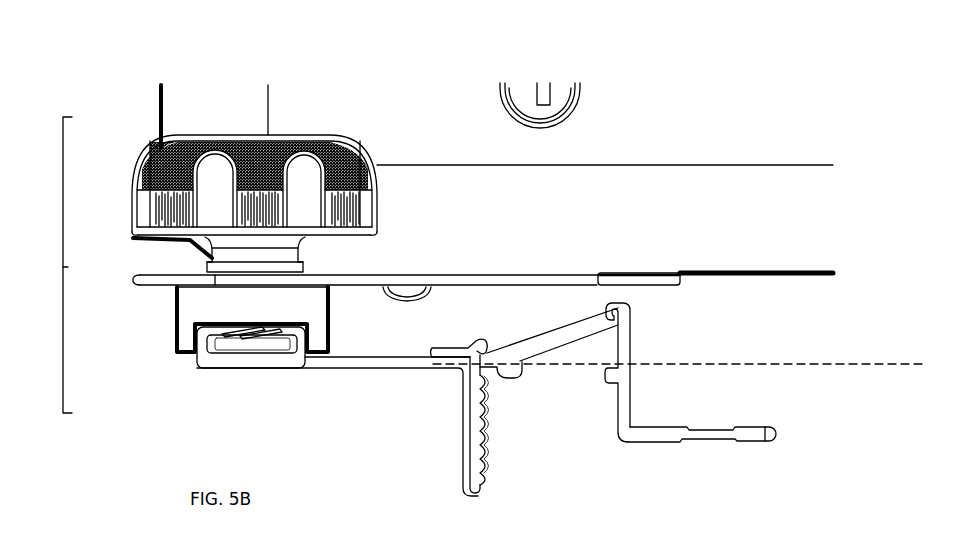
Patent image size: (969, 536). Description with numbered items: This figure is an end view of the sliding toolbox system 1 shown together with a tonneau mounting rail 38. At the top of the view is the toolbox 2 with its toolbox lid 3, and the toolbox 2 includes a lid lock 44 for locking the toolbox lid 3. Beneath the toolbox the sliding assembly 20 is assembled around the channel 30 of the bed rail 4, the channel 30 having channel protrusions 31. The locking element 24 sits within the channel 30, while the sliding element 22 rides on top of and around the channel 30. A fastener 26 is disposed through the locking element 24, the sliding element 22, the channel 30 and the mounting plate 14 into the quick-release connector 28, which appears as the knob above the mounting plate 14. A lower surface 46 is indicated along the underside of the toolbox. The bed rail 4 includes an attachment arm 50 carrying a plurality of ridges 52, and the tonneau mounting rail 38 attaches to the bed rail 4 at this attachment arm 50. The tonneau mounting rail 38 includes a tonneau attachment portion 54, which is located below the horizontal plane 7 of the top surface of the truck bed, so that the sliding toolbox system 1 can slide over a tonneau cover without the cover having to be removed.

The sliding toolbox system 1 is at (136, 40).
The toolbox 2 is at (176, 94).
The toolbox lid 3 is at (798, 150).
The bed rail 4 is at (390, 367).
The horizontal plane 7 is at (687, 367).
The mounting plate 14 is at (147, 283).
The sliding assembly 20 is at (47, 265).
The sliding element 22 is at (177, 315).
The locking element 24 is at (217, 340).
The fastener 26 is at (260, 335).
The quick-release connector 28 is at (148, 203).
The channel 30 is at (228, 357).
The channel protrusions 31 is at (305, 328).
The tonneau mounting rail 38 is at (562, 348).
The lid lock 44 is at (562, 103).
The lower surface 46 is at (693, 292).
The attachment arm 50 is at (463, 375).
The ridges 52 is at (469, 480).
The tonneau attachment portion 54 is at (658, 428).